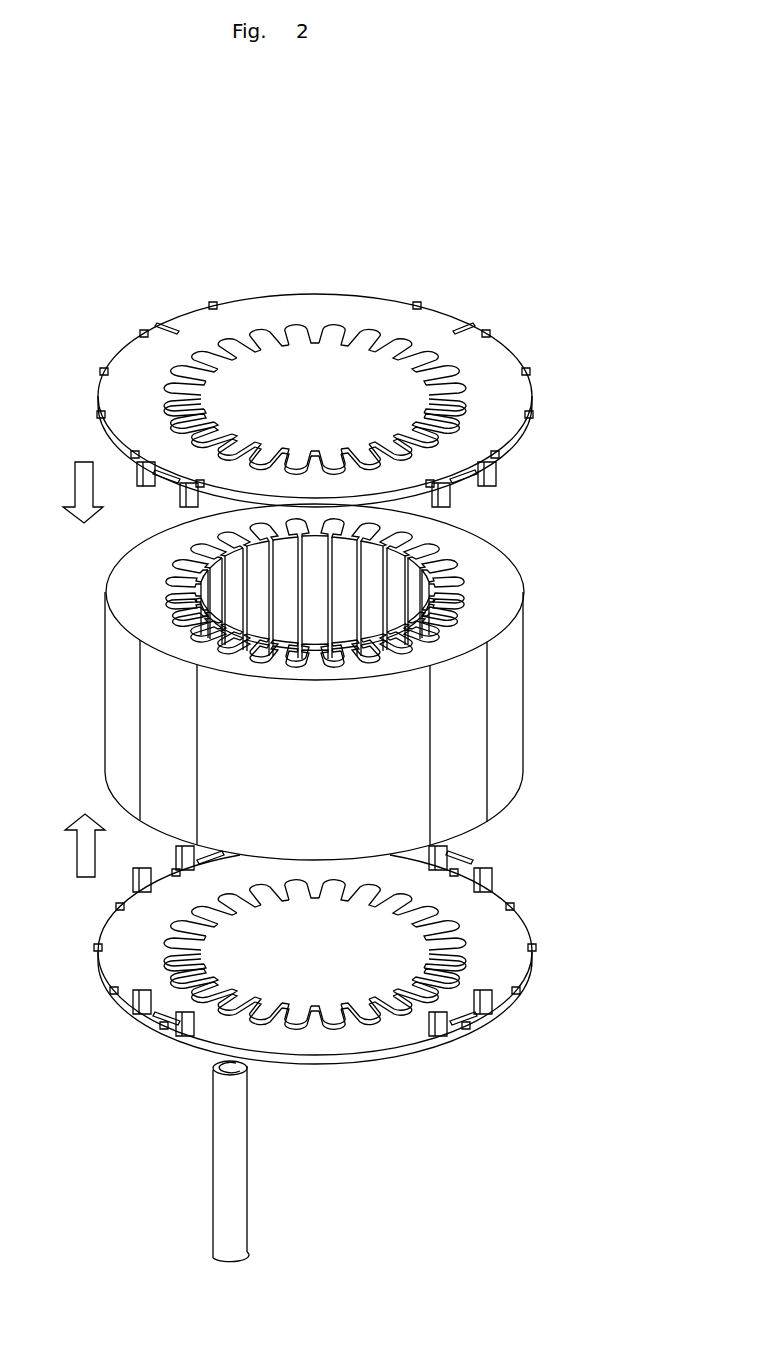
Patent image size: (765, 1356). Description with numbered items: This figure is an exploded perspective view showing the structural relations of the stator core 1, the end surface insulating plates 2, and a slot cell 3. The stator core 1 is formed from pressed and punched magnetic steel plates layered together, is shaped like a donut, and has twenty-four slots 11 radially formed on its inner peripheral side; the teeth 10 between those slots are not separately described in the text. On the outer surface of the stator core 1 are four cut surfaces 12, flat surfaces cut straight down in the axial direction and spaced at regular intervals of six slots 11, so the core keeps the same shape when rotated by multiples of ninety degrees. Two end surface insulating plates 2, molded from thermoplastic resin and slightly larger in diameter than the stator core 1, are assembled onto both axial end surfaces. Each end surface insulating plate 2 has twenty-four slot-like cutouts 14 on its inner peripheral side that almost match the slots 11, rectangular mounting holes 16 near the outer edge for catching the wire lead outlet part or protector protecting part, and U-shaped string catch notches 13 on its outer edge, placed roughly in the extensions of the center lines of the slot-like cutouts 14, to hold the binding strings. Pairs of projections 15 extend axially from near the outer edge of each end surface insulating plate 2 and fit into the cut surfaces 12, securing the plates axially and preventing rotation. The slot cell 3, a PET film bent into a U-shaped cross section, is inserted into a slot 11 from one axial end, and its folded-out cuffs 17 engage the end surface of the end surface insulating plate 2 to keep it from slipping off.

The stator core 1 is at (331, 682).
The end surface insulating plate 2 is at (408, 315).
The slot cell 3 is at (182, 1170).
The teeth 10 is at (415, 650).
The slot 11 is at (458, 583).
The cut surface 12 is at (160, 745).
The string catch notch 13 is at (510, 358).
The slot-like cutout 14 is at (165, 393).
The projection 15 is at (490, 477).
The mounting hole 16 is at (163, 331).
The cuff 17 is at (210, 1258).